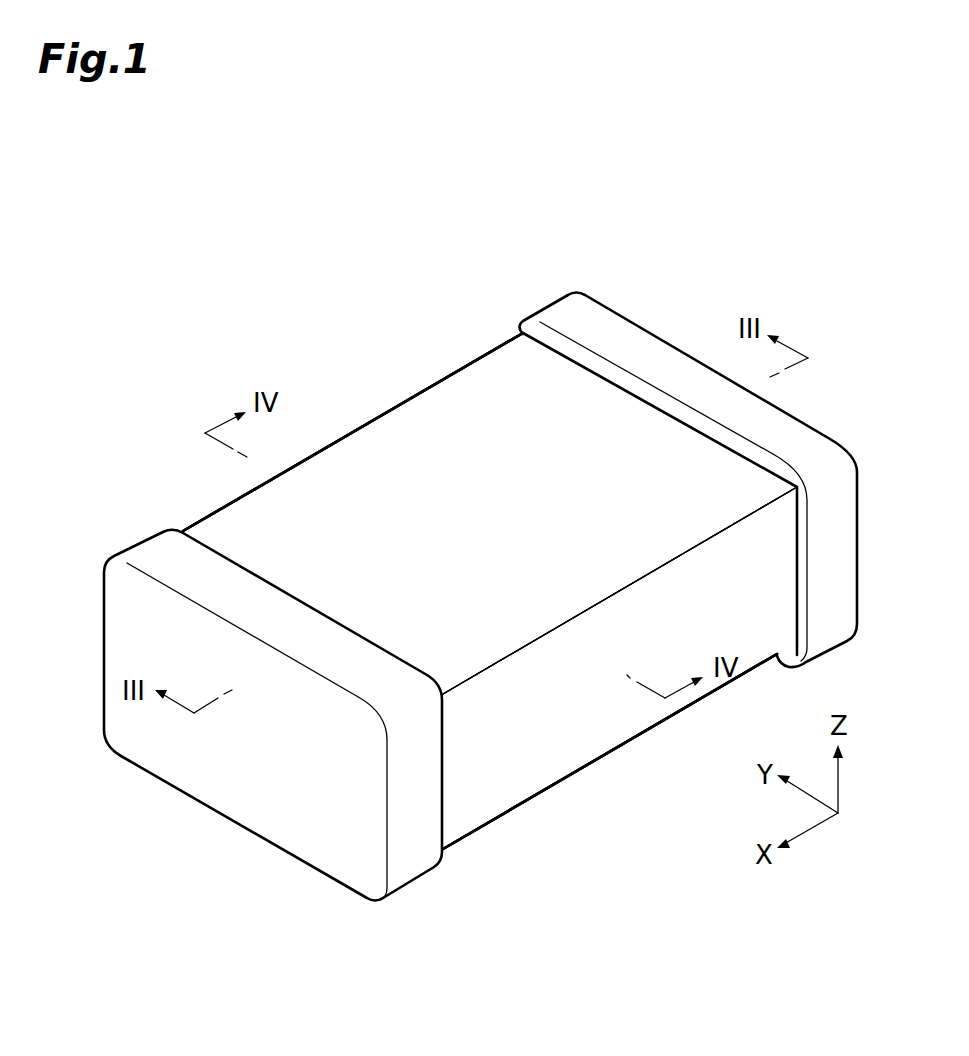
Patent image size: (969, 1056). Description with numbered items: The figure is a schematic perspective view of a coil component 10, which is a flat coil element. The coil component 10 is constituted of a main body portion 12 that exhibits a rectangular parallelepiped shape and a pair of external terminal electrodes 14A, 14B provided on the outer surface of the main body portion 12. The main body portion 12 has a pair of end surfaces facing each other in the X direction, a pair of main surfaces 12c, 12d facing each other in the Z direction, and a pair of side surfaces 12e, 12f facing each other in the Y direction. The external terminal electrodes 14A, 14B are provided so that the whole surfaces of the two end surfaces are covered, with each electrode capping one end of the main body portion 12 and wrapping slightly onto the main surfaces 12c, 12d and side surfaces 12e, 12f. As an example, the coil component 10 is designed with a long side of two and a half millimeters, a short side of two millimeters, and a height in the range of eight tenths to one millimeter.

The coil component 10 is at (472, 565).
The main body portion 12 is at (410, 422).
The main surface 12c is at (483, 393).
The main surface 12d is at (512, 773).
The side surface 12e is at (572, 745).
The side surface 12f is at (347, 483).
The external terminal electrode 14A is at (566, 320).
The external terminal electrode 14B is at (153, 558).